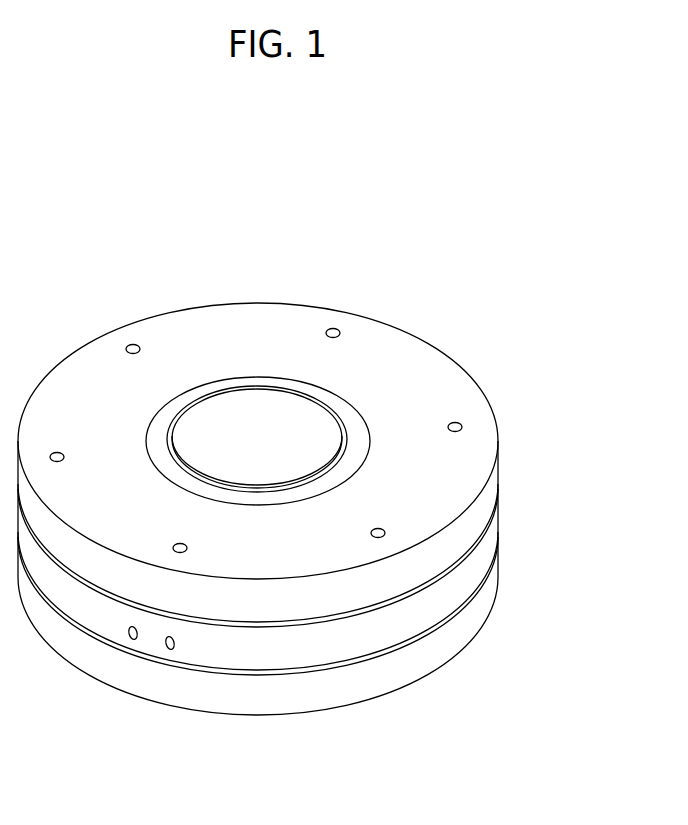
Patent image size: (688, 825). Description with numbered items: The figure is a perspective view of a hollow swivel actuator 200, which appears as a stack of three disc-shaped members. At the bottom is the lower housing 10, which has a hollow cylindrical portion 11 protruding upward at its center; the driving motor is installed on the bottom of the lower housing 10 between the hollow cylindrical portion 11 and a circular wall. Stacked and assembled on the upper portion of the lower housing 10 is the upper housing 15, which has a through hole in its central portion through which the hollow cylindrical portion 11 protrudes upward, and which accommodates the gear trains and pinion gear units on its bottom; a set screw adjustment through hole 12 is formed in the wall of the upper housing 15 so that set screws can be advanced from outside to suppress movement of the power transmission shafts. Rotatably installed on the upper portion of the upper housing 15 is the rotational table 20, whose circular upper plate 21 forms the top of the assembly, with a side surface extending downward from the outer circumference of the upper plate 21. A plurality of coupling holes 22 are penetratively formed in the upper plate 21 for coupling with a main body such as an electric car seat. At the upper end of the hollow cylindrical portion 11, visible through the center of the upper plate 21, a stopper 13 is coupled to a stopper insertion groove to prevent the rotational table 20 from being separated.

The hollow swivel actuator 200 is at (622, 250).
The lower housing 10 is at (488, 585).
The upper housing 15 is at (487, 540).
The rotational table 20 is at (488, 488).
The upper plate 21 is at (460, 397).
The coupling holes 22 is at (130, 344).
The hollow cylindrical portion 11 is at (288, 385).
The stopper 13 is at (328, 398).
The set screw adjustment through hole 12 is at (132, 639).